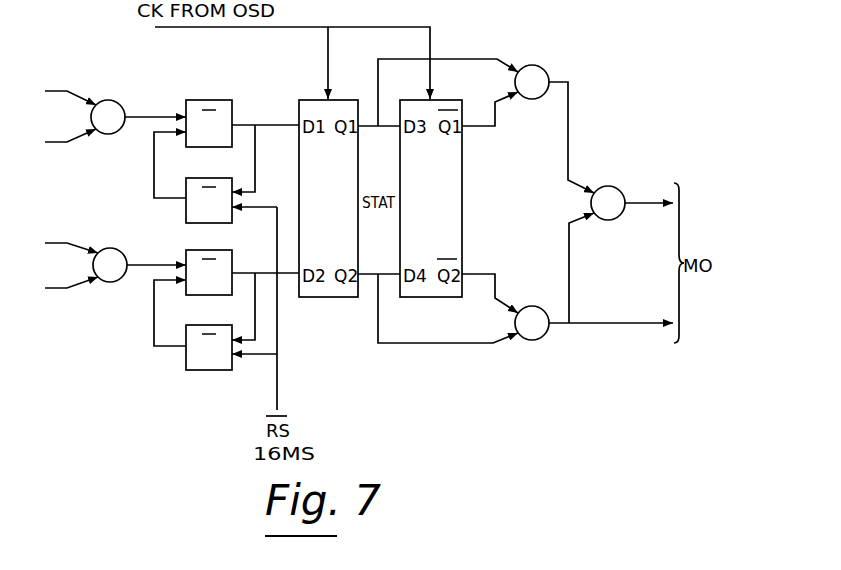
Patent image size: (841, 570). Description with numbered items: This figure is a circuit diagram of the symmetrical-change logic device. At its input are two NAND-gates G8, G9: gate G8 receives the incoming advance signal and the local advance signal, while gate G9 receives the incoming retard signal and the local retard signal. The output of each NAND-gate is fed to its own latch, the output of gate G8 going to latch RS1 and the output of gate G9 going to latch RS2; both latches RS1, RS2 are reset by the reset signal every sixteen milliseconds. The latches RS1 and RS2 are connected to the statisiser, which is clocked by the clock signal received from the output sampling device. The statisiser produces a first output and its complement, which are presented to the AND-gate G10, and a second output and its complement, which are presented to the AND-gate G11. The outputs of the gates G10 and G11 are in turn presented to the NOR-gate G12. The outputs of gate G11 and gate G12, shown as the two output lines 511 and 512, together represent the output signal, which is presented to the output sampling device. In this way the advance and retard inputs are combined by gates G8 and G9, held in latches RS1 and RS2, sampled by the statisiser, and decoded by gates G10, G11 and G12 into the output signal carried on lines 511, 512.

The output signal line 511 is at (611, 337).
The output signal line 512 is at (649, 192).
The NAND-gate G8 is at (106, 119).
The NAND-gate G9 is at (106, 267).
The AND-gate G10 is at (476, 122).
The AND-gate G11 is at (476, 278).
The NOR-gate G12 is at (608, 191).
The latch RS1 is at (226, 161).
The latch RS2 is at (226, 310).